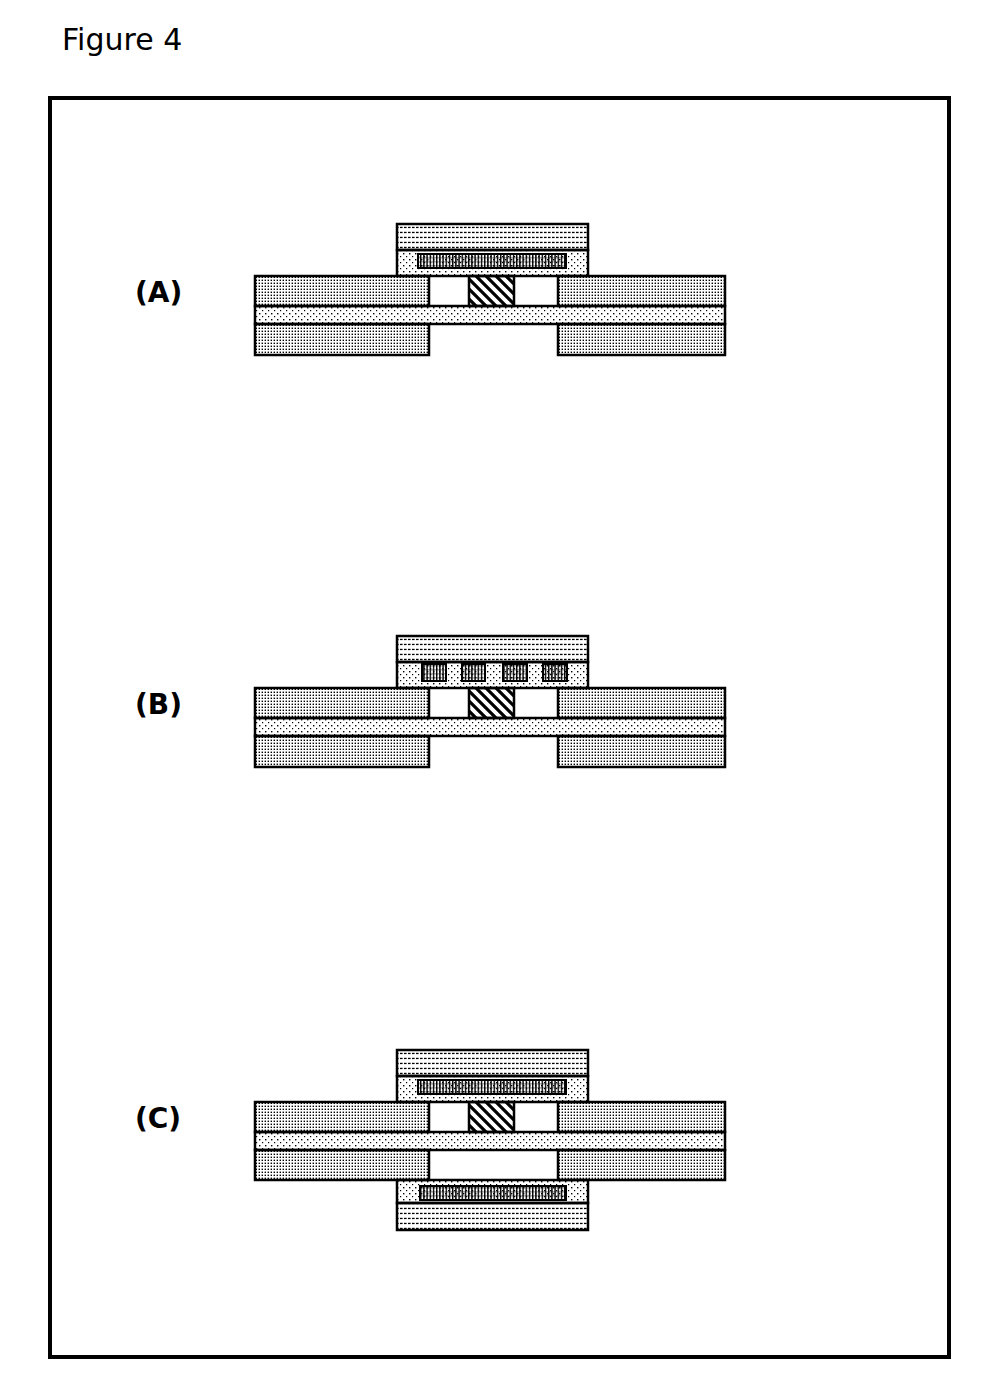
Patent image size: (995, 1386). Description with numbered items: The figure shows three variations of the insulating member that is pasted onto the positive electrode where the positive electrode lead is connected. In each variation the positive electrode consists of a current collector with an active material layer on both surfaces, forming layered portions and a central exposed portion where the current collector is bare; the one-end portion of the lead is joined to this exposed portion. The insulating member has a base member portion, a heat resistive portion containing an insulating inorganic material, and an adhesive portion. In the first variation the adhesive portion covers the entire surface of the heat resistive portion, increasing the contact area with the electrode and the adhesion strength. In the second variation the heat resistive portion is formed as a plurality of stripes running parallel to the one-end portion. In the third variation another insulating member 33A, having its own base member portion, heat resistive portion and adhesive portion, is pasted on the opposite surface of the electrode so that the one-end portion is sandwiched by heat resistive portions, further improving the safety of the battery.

The other insulating member 33A is at (492, 1251).